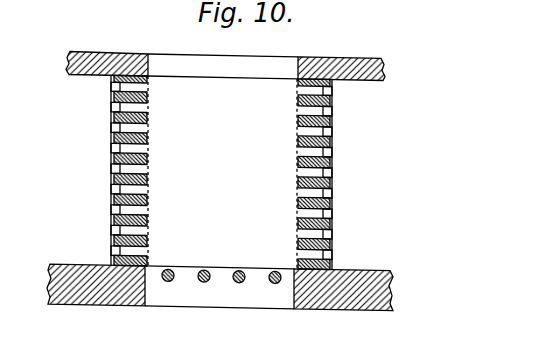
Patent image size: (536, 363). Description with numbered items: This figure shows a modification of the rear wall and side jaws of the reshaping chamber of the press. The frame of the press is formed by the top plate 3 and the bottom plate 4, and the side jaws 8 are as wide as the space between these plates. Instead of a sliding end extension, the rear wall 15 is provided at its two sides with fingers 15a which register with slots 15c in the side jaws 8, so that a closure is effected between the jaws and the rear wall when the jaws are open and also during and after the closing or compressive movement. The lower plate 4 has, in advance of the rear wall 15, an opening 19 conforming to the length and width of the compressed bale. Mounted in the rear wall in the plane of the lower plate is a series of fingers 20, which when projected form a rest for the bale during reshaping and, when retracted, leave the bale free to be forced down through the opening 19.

The top plate 3 is at (341, 57).
The bottom plate 4 is at (348, 322).
The side jaw 8 is at (237, 172).
The rear wall 15 is at (222, 172).
The fingers 15a is at (132, 131).
The slots 15c is at (112, 172).
The opening 19 is at (234, 300).
The fingers 20 is at (272, 269).